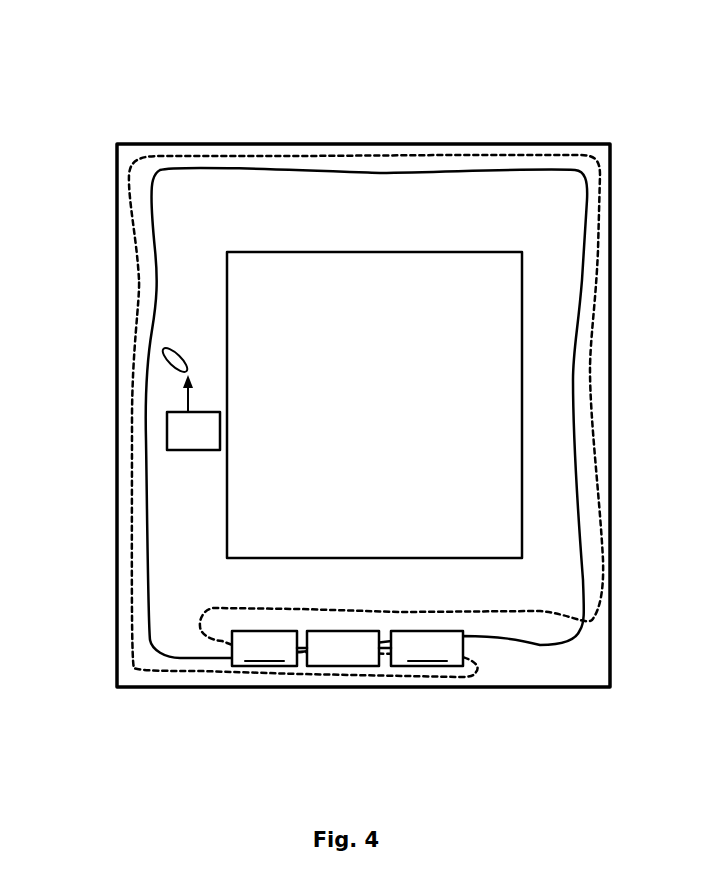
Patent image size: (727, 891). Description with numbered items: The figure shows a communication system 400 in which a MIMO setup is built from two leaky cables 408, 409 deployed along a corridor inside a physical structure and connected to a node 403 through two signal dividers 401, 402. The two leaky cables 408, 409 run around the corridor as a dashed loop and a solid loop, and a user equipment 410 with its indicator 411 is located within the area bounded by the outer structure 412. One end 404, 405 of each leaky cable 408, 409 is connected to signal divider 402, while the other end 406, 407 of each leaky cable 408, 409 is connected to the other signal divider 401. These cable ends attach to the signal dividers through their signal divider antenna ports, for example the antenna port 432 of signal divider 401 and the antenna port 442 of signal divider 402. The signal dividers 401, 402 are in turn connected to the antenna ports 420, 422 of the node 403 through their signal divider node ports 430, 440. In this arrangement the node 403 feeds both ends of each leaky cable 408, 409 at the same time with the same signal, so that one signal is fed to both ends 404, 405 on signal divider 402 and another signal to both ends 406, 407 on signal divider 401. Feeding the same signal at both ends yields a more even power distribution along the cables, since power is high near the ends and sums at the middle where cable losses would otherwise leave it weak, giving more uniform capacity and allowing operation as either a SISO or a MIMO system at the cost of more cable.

The communication system 400 is at (126, 79).
The signal divider 401 is at (230, 635).
The signal divider 402 is at (465, 632).
The node 403 is at (327, 663).
The end of leaky cable 404 is at (470, 673).
The end of leaky cable 405 is at (507, 638).
The end of leaky cable 406 is at (221, 641).
The end of leaky cable 407 is at (188, 658).
The leaky cable 408 is at (135, 592).
The leaky cable 409 is at (148, 547).
The user equipment (UE) 410 is at (167, 435).
The UE movement / position indicator 411 is at (118, 336).
The outer area / building boundary 412 is at (490, 143).
The antenna port of the node 420 is at (302, 648).
The antenna port of the node 422 is at (385, 648).
The signal divider node port 430 is at (255, 690).
The signal divider antenna port 432 is at (232, 650).
The signal divider node port 440 is at (382, 672).
The signal divider antenna port 442 is at (468, 651).